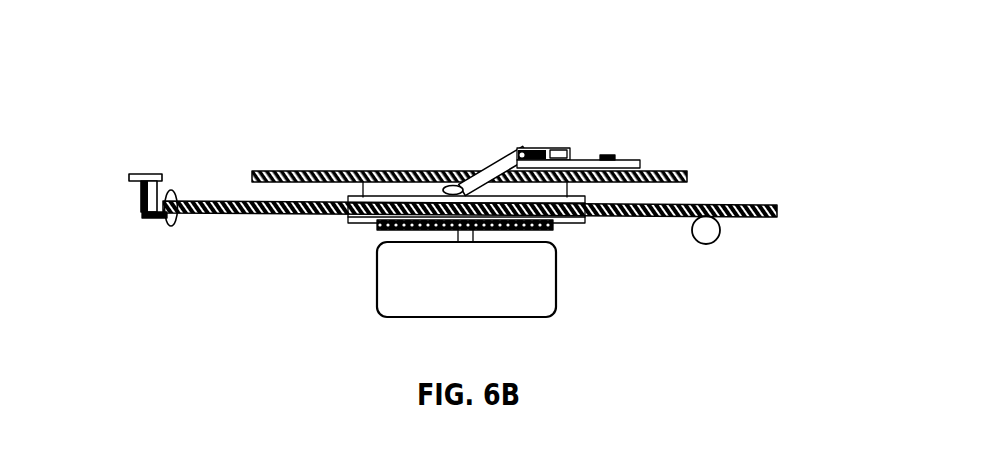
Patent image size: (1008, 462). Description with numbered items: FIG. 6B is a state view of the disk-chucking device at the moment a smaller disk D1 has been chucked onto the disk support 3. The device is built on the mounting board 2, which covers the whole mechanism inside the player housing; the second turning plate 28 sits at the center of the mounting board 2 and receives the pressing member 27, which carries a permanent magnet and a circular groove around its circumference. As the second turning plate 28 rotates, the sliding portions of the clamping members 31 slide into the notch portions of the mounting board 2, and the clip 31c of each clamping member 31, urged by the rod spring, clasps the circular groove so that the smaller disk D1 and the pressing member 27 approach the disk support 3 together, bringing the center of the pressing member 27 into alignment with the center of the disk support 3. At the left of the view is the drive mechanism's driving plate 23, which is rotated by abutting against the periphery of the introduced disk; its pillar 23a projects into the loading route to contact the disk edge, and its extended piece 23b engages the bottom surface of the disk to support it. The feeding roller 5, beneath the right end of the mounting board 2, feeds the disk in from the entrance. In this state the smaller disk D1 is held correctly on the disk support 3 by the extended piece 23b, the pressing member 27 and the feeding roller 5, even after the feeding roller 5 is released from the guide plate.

The mounting board 2 is at (682, 171).
The disk support 3 is at (350, 219).
The feeding roller 5 is at (715, 238).
The driving plate 23 is at (131, 174).
The pillar 23a is at (141, 196).
The extended piece 23b is at (172, 225).
The pressing member 27 is at (408, 172).
The second turning plate 28 is at (634, 166).
The clamping member 31 is at (516, 152).
The clip 31c is at (464, 183).
The smaller disk D1 is at (751, 205).